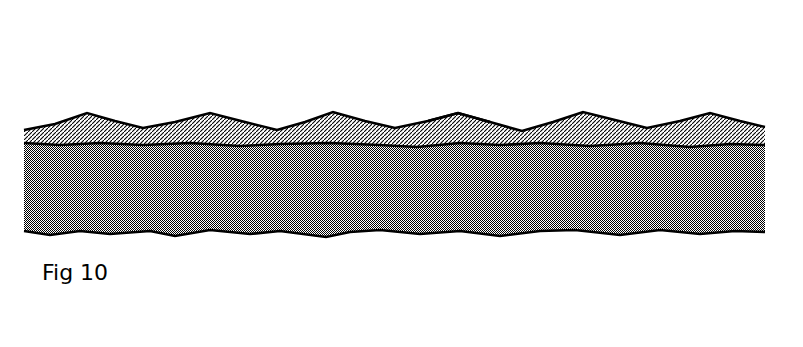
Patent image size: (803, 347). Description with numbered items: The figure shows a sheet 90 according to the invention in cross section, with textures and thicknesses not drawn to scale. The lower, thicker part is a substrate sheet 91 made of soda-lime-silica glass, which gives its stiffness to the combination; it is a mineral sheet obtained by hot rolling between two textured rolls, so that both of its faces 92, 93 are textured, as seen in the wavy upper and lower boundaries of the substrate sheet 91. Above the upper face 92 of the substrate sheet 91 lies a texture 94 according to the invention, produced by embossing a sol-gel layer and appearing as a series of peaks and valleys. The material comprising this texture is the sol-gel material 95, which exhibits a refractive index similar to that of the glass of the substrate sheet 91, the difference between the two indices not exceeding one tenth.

The sheet 90 is at (394, 166).
The substrate sheet 91 is at (570, 190).
The face of the substrate sheet 92 is at (417, 147).
The face of the substrate sheet 93 is at (326, 237).
The texture 94 is at (240, 120).
The sol-gel material 95 is at (451, 123).